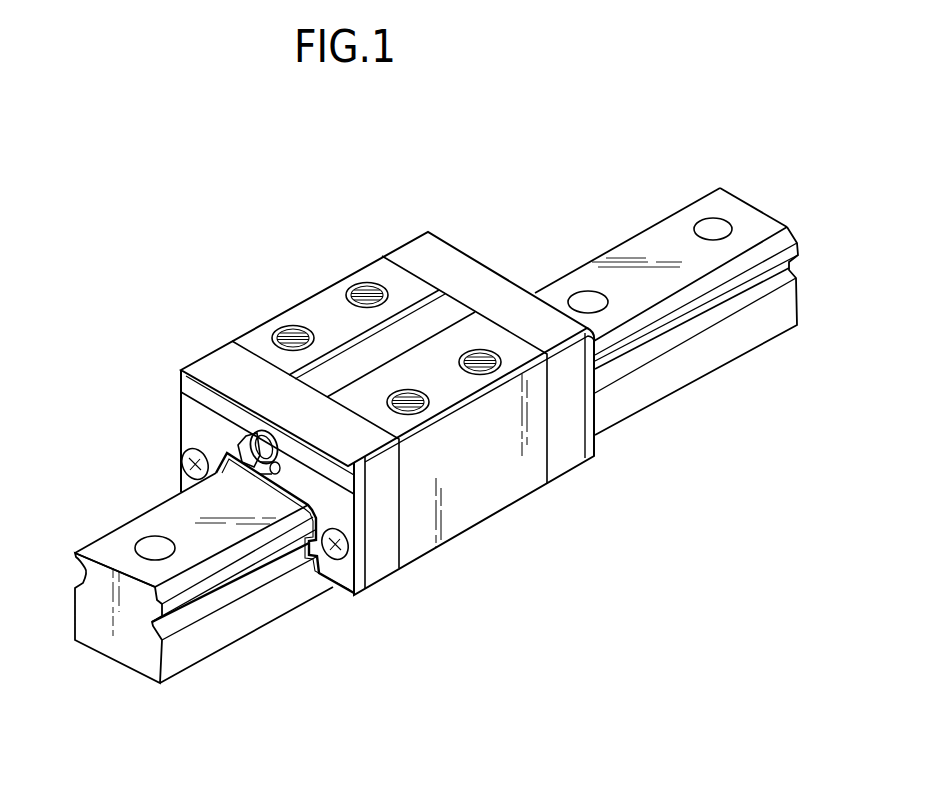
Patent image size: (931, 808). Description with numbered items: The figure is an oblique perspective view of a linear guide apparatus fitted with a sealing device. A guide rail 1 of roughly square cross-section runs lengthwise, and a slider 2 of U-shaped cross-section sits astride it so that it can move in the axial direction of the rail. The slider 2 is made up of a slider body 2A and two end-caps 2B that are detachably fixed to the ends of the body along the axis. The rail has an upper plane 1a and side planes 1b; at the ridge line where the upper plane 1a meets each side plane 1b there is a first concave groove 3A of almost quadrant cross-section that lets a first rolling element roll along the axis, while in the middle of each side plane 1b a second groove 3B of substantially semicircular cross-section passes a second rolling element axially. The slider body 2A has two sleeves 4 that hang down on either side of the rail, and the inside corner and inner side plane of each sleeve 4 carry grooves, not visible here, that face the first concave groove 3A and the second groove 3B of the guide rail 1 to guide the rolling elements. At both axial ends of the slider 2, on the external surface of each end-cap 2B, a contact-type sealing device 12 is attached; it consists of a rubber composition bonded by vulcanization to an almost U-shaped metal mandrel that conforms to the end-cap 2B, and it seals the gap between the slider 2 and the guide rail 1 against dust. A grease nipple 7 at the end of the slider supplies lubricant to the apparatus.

The guide rail 1 is at (100, 530).
The upper plane 1a is at (162, 522).
The side plane 1b is at (75, 617).
The slider 2 is at (285, 308).
The slider body 2A is at (333, 300).
The end-cap 2B is at (410, 252).
The first concave groove 3A is at (82, 551).
The second groove 3B is at (78, 587).
The sleeve 4 is at (503, 493).
The grease nipple 7 is at (281, 464).
The sealing device 12 is at (328, 572).